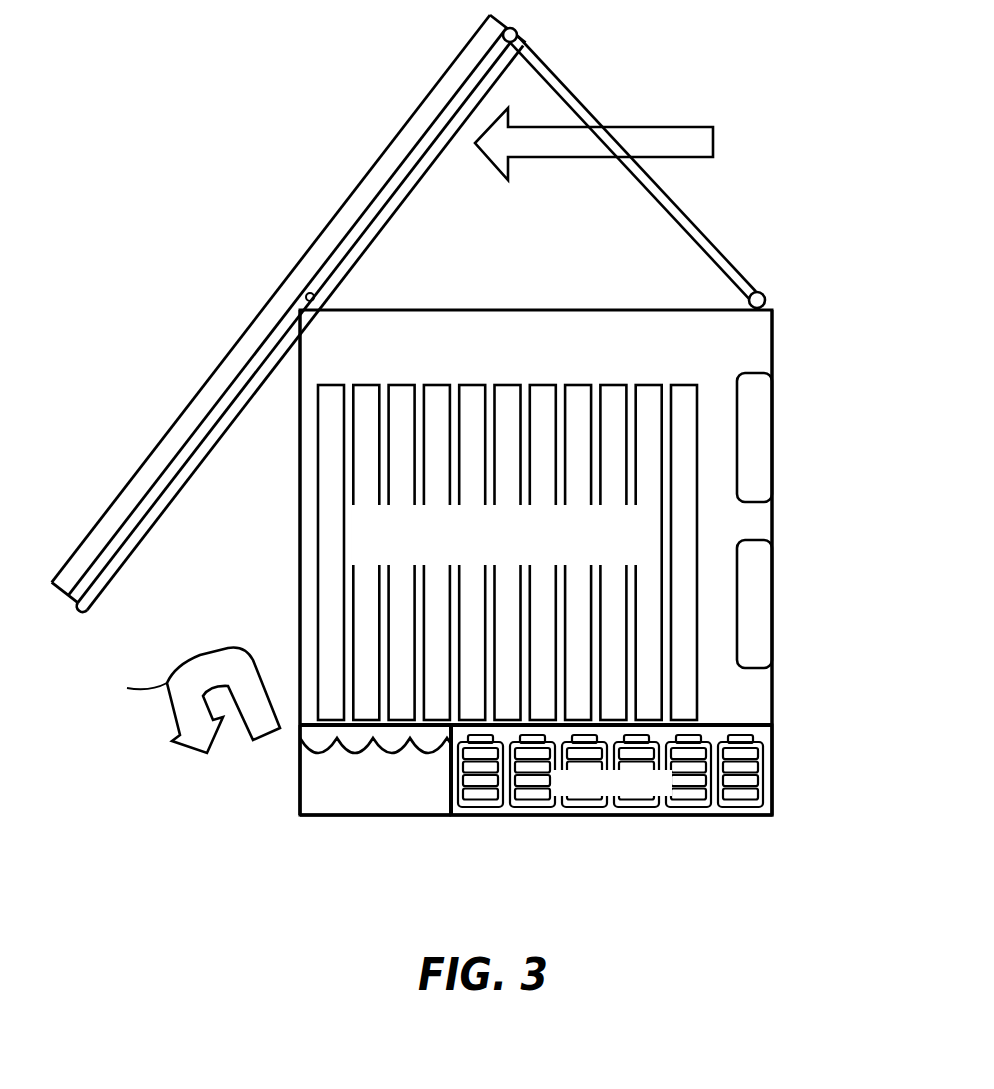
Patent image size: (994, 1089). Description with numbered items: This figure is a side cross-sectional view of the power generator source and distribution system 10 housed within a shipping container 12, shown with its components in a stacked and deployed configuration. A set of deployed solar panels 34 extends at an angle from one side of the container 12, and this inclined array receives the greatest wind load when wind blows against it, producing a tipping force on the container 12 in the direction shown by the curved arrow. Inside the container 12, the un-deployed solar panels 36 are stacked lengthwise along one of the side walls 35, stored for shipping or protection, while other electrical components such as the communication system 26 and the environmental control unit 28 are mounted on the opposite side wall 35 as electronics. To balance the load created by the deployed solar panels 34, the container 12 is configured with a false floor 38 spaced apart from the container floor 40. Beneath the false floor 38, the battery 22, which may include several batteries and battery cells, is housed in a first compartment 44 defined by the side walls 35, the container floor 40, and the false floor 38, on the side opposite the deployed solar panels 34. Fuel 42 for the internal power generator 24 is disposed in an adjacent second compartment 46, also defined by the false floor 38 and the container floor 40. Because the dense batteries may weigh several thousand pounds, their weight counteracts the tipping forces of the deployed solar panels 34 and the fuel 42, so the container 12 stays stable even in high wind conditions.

The power generator source and distribution system 10 is at (835, 243).
The container 12 is at (772, 321).
The battery 22 is at (688, 807).
The internal power generator 24 is at (325, 803).
The communication system 26 is at (772, 438).
The environmental control unit 28 is at (772, 604).
The deployed solar panels 34 is at (207, 380).
The side walls 35 is at (772, 359).
The un-deployed solar panels 36 is at (317, 528).
The false floor 38 is at (742, 724).
The container floor 40 is at (772, 814).
The fuel 42 is at (400, 803).
The first compartment 44 is at (722, 731).
The second compartment 46 is at (300, 787).